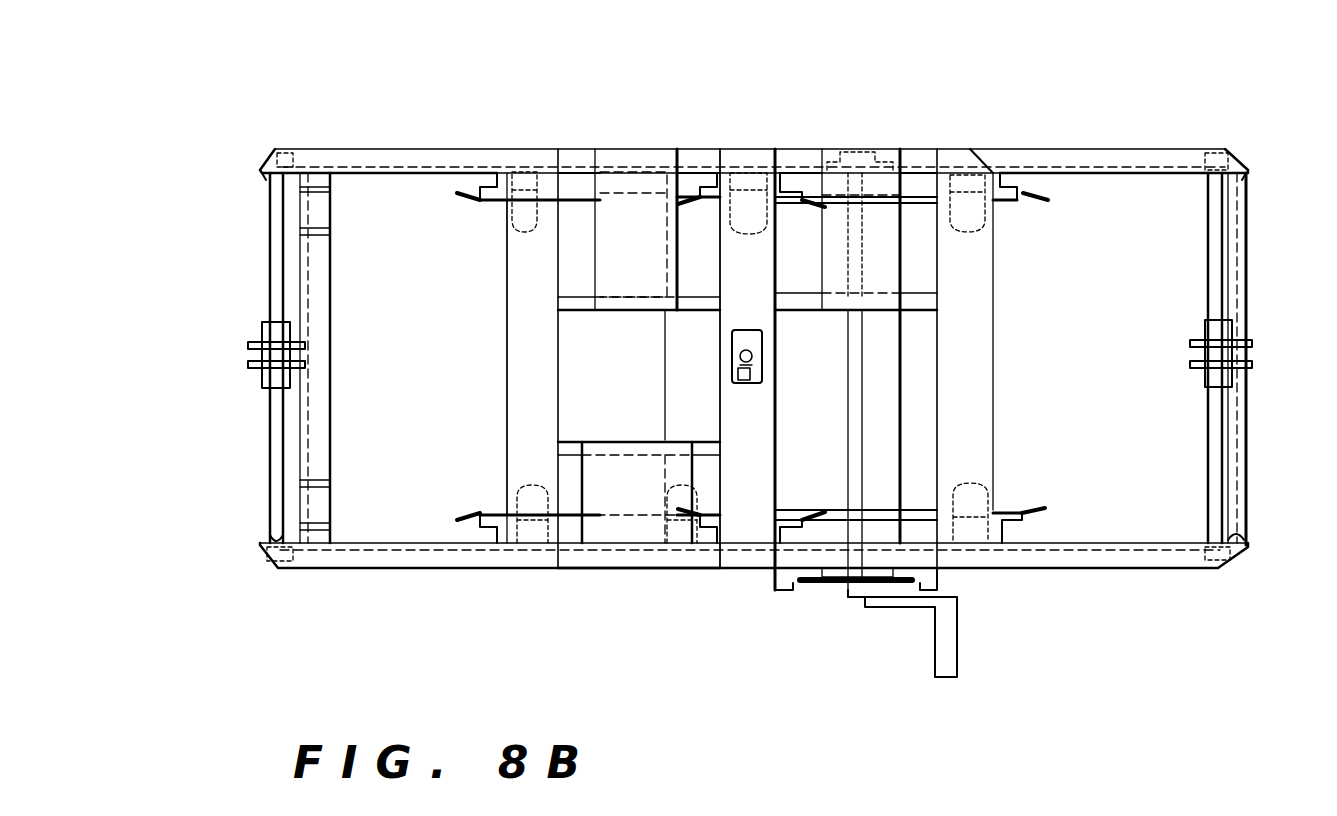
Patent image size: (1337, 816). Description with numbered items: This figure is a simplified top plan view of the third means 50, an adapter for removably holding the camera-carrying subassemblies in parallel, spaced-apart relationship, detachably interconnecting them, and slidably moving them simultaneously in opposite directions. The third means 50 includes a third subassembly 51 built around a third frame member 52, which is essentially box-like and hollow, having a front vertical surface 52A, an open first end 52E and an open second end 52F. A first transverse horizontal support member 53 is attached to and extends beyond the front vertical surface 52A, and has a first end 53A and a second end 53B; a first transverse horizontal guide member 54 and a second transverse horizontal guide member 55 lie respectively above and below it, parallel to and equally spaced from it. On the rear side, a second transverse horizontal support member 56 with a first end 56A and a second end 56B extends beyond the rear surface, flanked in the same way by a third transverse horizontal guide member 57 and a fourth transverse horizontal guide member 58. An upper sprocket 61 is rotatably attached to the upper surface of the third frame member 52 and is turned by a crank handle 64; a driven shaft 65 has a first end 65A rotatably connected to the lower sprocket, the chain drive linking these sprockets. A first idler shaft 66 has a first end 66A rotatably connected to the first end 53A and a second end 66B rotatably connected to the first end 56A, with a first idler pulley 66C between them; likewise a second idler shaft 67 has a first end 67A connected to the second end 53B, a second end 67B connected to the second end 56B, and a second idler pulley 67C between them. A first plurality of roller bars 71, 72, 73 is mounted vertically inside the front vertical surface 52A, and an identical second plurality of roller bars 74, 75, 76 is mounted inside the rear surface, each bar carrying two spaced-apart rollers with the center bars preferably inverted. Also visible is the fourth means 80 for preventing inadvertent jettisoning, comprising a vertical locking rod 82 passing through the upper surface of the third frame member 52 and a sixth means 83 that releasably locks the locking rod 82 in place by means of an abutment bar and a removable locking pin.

The third means 50 is at (1088, 90).
The third subassembly 51 is at (1108, 146).
The third frame member 52 is at (737, 150).
The front vertical surface 52A is at (660, 570).
The open first end 52E is at (520, 348).
The open second end 52F is at (985, 333).
The first transverse horizontal support member 53 is at (378, 570).
The first end of first transverse horizontal support member 53A is at (292, 575).
The second end of first transverse horizontal support member 53B is at (1210, 571).
The first transverse horizontal guide member 54 is at (480, 512).
The second transverse horizontal guide member 55 is at (457, 522).
The second transverse horizontal support member 56 is at (418, 148).
The first end of second transverse horizontal support member 56A is at (302, 147).
The second end of second transverse horizontal support member 56B is at (1184, 148).
The third transverse horizontal guide member 57 is at (458, 196).
The fourth transverse horizontal guide member 58 is at (460, 193).
The upper sprocket 61 is at (806, 590).
The crank handle 64 is at (902, 600).
The driven shaft 65 is at (860, 432).
The first end of driven shaft 65A is at (858, 150).
The first idler shaft 66 is at (270, 254).
The first end of first idler shaft 66A is at (270, 530).
The second end of first idler shaft 66B is at (268, 176).
The first idler pulley 66C is at (248, 352).
The second idler shaft 67 is at (1225, 266).
The first end of second idler shaft 67A is at (1245, 530).
The second end of second idler shaft 67B is at (1250, 181).
The second idler pulley 67C is at (1252, 352).
The roller bar 71 is at (535, 545).
The roller bar 72 is at (733, 547).
The roller bar 73 is at (967, 545).
The roller bar 74 is at (518, 182).
The roller bar 75 is at (752, 186).
The roller bar 76 is at (977, 190).
The fourth means 80 is at (732, 362).
The locking rod 82 is at (760, 357).
The sixth means 83 is at (750, 383).